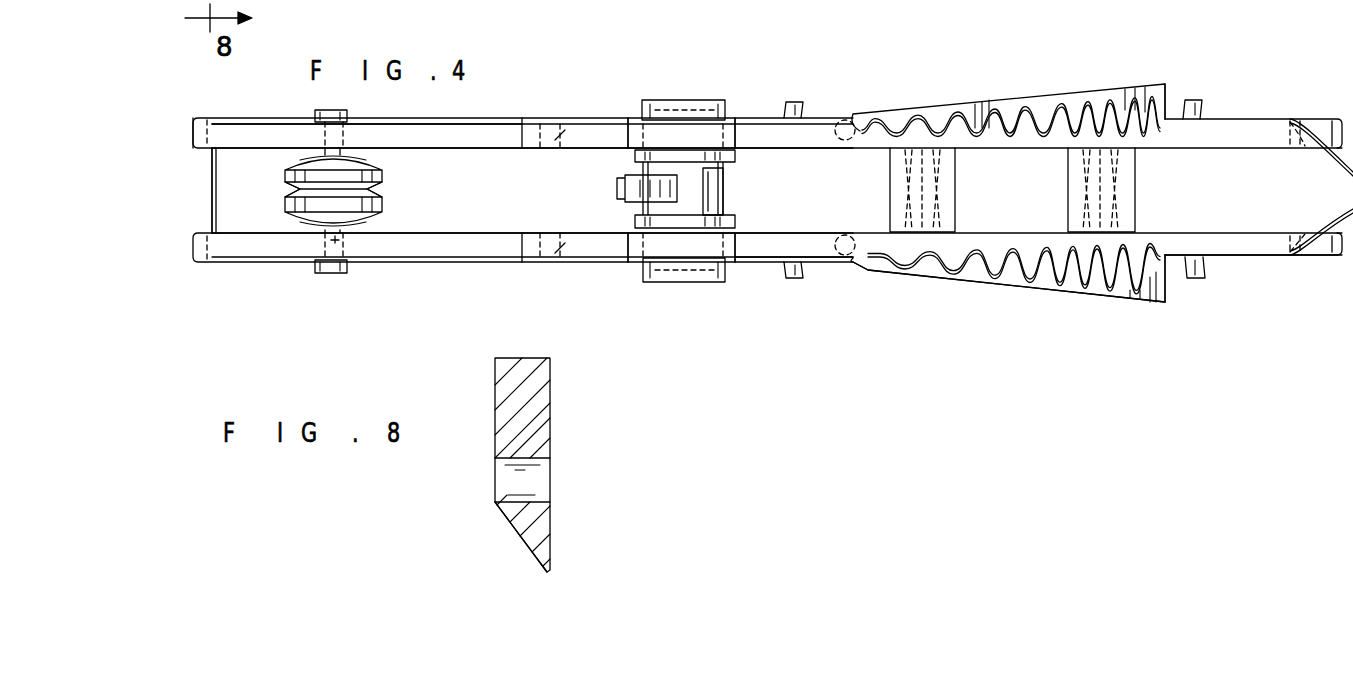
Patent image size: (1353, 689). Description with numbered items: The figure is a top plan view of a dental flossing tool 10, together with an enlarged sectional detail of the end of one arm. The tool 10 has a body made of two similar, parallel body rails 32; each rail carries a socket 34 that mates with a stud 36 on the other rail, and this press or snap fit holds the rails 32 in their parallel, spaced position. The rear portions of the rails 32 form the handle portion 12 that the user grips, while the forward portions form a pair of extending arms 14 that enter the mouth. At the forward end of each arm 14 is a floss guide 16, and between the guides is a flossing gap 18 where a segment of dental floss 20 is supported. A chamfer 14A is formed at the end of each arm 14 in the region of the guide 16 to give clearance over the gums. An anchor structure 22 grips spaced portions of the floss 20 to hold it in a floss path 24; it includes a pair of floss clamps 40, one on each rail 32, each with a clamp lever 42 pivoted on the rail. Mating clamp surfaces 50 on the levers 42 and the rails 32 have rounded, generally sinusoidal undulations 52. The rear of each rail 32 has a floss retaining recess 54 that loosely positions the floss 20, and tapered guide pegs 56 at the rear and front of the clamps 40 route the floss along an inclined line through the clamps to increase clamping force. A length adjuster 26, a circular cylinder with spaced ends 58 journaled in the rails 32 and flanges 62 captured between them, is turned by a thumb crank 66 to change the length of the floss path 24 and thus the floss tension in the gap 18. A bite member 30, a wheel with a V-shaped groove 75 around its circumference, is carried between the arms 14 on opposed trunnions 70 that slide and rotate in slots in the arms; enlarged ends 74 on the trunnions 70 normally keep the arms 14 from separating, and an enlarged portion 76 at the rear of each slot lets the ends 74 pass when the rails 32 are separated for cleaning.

In FIG. 4, the dental flossing tool 10 is at (593, 72).
In FIG. 4, the handle portion 12 is at (1128, 355).
In FIG. 4, the extending arms 14 is at (280, 140).
In FIG. 8, the extending arms 14 is at (545, 400).
In FIG. 8, the chamfer 14A is at (522, 530).
In FIG. 8, the floss guide 16 is at (545, 474).
In FIG. 4, the flossing gap 18 is at (205, 244).
In FIG. 4, the dental floss 20 is at (212, 186).
In FIG. 4, the anchor structure 22 is at (990, 350).
In FIG. 4, the floss path 24 is at (755, 262).
In FIG. 4, the length adjuster 26 is at (710, 98).
In FIG. 4, the bite member 30 is at (352, 210).
In FIG. 4, the body rails 32 is at (482, 250).
In FIG. 4, the socket 34 is at (1080, 187).
In FIG. 4, the stud 36 is at (905, 187).
In FIG. 4, the floss clamp 40 is at (950, 100).
In FIG. 4, the clamp lever 42 is at (1152, 98).
In FIG. 4, the clamp surfaces 50 is at (1035, 108).
In FIG. 4, the rounded undulations 52 is at (1105, 100).
In FIG. 4, the floss retaining recess 54 is at (1300, 120).
In FIG. 4, the guide pegs 56 is at (795, 100).
In FIG. 4, the spaced ends 58 is at (678, 105).
In FIG. 4, the flanges 62 is at (735, 222).
In FIG. 4, the thumb crank 66 is at (617, 186).
In FIG. 4, the trunnions 70 is at (355, 135).
In FIG. 4, the enlarged ends 74 is at (335, 110).
In FIG. 4, the V-shaped groove 75 is at (372, 189).
In FIG. 4, the enlarged portion 76 is at (560, 140).